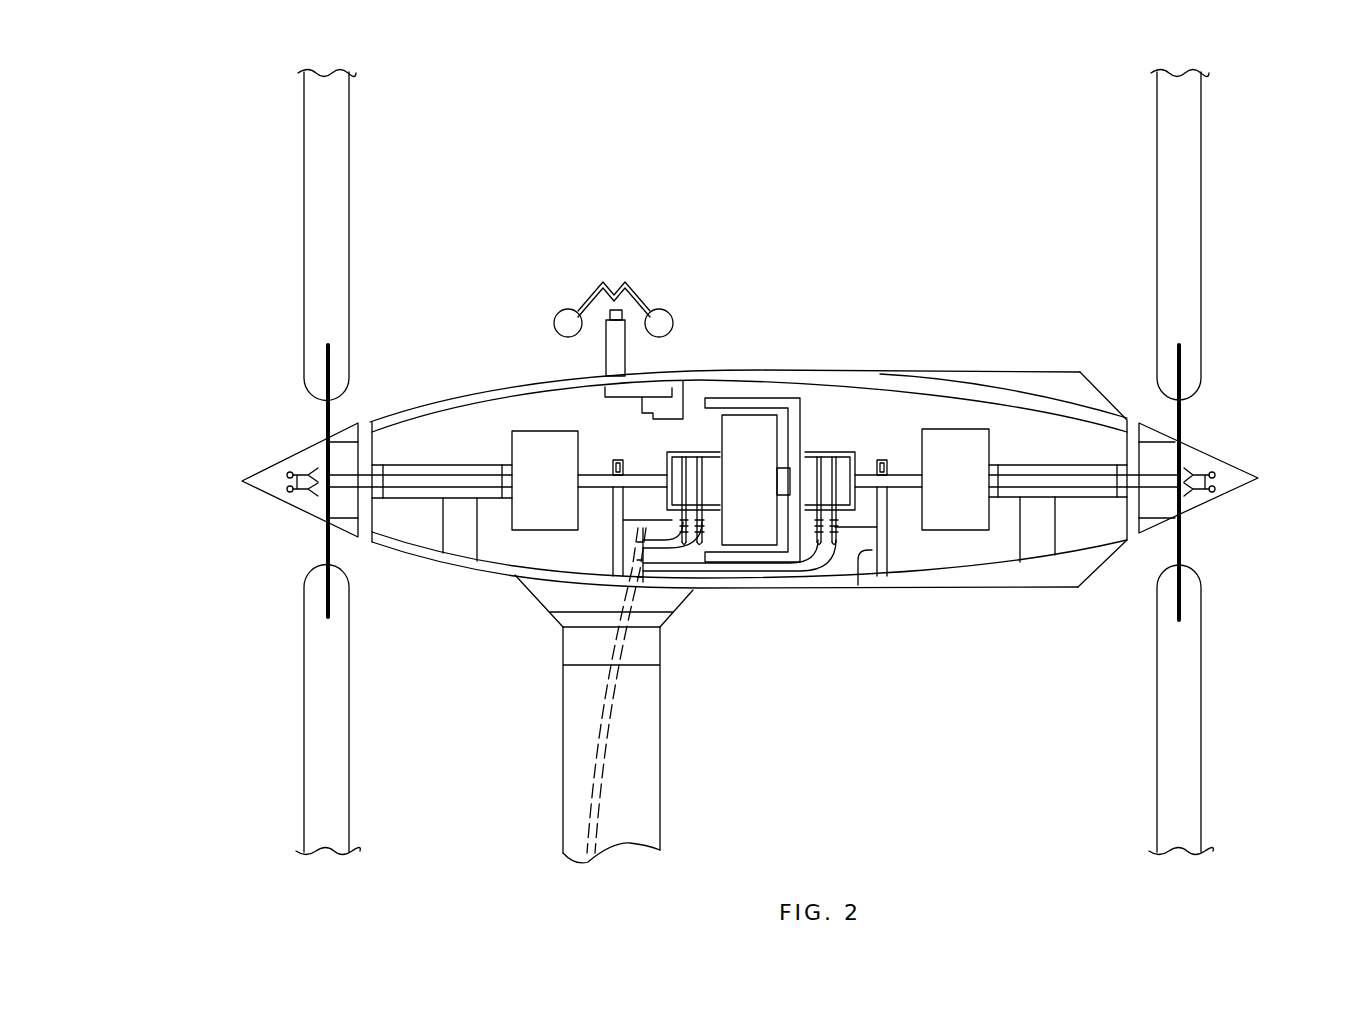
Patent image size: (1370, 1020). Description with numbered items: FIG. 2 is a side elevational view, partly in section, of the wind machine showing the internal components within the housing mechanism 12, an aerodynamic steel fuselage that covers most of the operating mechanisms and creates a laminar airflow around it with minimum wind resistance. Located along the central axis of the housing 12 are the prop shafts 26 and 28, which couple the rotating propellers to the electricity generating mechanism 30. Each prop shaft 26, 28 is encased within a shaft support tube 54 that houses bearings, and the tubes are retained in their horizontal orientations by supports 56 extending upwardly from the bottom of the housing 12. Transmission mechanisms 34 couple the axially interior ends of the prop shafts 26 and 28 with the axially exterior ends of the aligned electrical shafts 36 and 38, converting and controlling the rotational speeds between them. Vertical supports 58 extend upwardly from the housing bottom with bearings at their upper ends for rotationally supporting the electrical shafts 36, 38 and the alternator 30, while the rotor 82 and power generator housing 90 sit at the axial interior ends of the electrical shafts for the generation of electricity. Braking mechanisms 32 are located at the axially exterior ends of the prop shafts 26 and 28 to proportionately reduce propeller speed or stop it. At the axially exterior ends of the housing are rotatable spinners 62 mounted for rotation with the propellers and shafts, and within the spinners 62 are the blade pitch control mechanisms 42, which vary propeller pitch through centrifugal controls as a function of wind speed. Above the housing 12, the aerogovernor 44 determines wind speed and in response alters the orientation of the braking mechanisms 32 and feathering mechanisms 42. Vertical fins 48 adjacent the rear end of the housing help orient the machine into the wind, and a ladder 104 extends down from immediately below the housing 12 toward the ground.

The housing mechanism 12 is at (822, 374).
The prop shaft 26 is at (433, 462).
The prop shaft 28 is at (1087, 462).
The electricity generating mechanism 30 is at (746, 375).
The braking mechanism 32 is at (342, 490).
The transmission mechanism 34 is at (548, 512).
The electrical shaft 36 is at (597, 490).
The electrical shaft 38 is at (899, 488).
The blade pitch control mechanism 42 is at (1198, 490).
The aerogovernor 44 is at (638, 287).
The vertical fin 48 is at (1012, 378).
The shaft support tube 54 is at (488, 462).
The support 56 is at (1042, 533).
The vertical support 58 is at (620, 457).
The spinner 62 is at (268, 462).
The rotor 82 is at (753, 530).
The power generator housing 90 is at (713, 396).
The ladder 104 is at (563, 648).